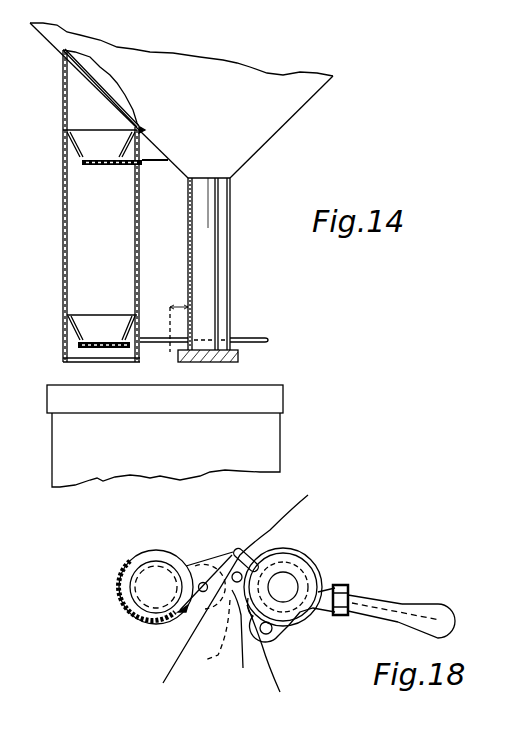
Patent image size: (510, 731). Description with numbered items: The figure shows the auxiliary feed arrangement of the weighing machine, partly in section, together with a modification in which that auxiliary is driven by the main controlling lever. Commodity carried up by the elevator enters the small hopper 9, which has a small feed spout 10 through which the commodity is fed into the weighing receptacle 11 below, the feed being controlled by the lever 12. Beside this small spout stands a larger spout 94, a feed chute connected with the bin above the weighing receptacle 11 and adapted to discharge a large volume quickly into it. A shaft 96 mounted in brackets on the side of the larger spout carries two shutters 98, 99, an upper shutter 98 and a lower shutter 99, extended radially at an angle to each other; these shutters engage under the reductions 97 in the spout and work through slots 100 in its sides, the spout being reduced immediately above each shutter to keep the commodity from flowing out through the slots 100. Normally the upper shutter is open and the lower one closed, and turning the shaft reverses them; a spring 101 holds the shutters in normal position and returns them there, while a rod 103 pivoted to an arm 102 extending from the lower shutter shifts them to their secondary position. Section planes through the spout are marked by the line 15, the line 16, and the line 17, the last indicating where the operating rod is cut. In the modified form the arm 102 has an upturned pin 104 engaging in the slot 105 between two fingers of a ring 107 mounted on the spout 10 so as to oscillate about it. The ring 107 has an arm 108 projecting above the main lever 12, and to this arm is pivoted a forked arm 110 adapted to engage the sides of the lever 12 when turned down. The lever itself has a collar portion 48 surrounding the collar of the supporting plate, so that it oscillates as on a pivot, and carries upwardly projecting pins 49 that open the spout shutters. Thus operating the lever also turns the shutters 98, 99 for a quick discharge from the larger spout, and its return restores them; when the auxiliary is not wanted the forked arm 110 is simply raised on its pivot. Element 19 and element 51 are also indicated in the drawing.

In FIG. 14, the small hopper 9 is at (181, 100).
In FIG. 14, the small feed spout 10 is at (240, 256).
In FIG. 18, the small feed spout 10 is at (302, 571).
In FIG. 14, the weighing receptacle 11 is at (289, 453).
In FIG. 18, the lever 12 is at (426, 611).
In FIG. 14, the line 15 is at (178, 159).
In FIG. 14, the line 16 is at (280, 337).
In FIG. 14, the line 17 is at (179, 323).
In FIG. 18, the shaft 19 is at (375, 612).
In FIG. 18, the collar portion 48 is at (297, 625).
In FIG. 18, the upwardly projecting pins 49 is at (220, 619).
In FIG. 18, the bolt 51 is at (262, 606).
In FIG. 14, the larger spout 94 is at (63, 250).
In FIG. 18, the larger spout 94 is at (142, 600).
In FIG. 18, the shaft 96 is at (190, 608).
In FIG. 14, the reductions 97 is at (80, 145).
In FIG. 14, the upper shutter 98 is at (157, 170).
In FIG. 18, the upper shutter 98 is at (207, 660).
In FIG. 14, the lower shutter 99 is at (90, 350).
In FIG. 18, the lower shutter 99 is at (140, 587).
In FIG. 14, the slots 100 is at (80, 163).
In FIG. 18, the slots 100 is at (177, 547).
In FIG. 18, the spring 101 is at (240, 601).
In FIG. 18, the arm 102 is at (213, 563).
In FIG. 14, the rod 103 is at (242, 337).
In FIG. 18, the upturned pin 104 is at (235, 552).
In FIG. 18, the slot 105 is at (250, 562).
In FIG. 18, the ring 107 is at (275, 655).
In FIG. 18, the arm 108 is at (337, 585).
In FIG. 18, the forked arm 110 is at (348, 590).